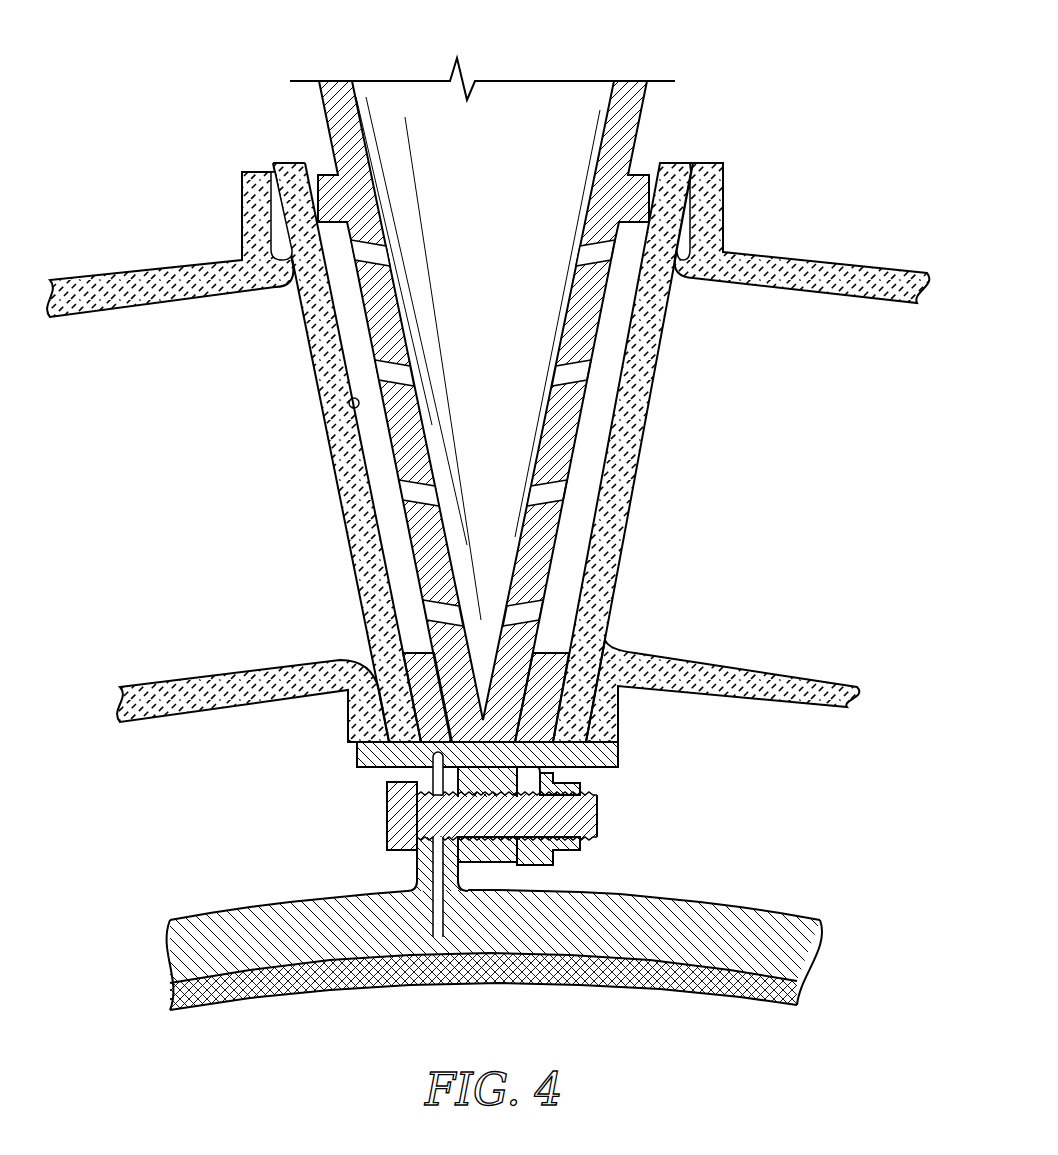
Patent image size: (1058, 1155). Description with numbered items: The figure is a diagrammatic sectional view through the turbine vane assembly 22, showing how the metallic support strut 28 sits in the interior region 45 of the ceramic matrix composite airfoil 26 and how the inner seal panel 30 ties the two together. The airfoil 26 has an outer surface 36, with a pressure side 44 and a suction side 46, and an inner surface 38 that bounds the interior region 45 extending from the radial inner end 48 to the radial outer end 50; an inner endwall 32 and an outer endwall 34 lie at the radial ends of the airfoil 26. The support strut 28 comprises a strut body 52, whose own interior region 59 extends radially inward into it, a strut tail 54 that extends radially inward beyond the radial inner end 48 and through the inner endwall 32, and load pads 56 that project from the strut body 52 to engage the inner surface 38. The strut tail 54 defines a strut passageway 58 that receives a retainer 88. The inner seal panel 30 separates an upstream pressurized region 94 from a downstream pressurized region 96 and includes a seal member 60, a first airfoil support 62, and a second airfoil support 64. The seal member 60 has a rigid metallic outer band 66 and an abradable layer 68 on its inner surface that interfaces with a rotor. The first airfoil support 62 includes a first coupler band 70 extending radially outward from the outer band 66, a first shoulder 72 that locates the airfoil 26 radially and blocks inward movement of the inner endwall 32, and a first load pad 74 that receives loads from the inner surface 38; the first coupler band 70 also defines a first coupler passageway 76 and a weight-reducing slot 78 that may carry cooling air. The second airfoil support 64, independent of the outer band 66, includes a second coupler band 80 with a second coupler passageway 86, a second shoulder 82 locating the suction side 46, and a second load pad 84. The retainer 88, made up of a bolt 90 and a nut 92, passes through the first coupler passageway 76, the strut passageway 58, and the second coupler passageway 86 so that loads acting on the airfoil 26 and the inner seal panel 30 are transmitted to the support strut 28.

The turbine vane assembly 22 is at (183, 130).
The airfoil 26 is at (338, 512).
The support strut 28 is at (584, 463).
The inner seal panel 30 is at (175, 905).
The inner endwall 32 is at (140, 668).
The outer endwall 34 is at (75, 272).
The outer surface 36 is at (303, 324).
The inner surface 38 is at (348, 399).
The pressure side 44 is at (343, 552).
The interior region 45 is at (707, 262).
The suction side 46 is at (656, 421).
The radial inner end 48 is at (362, 715).
The radial outer end 50 is at (309, 162).
The strut body 52 is at (547, 422).
The strut tail 54 is at (485, 878).
The load pads 56 is at (317, 166).
The strut passageway 58 is at (522, 826).
The interior region 59 is at (546, 128).
The seal member 60 is at (782, 898).
The first airfoil support 62 is at (332, 768).
The second airfoil support 64 is at (647, 752).
The outer band 66 is at (735, 897).
The abradable layer 68 is at (716, 1005).
The first coupler band 70 is at (405, 880).
The first shoulder 72 is at (356, 784).
The first load pad 74 is at (414, 638).
The first coupler passageway 76 is at (405, 867).
The slot 78 is at (440, 942).
The second coupler band 80 is at (564, 784).
The second shoulder 82 is at (628, 754).
The second load pad 84 is at (560, 640).
The second coupler passageway 86 is at (537, 817).
The retainer 88 is at (604, 812).
The bolt 90 is at (442, 821).
The nut 92 is at (601, 852).
The pressurized region 94 is at (217, 819).
The pressurized region 96 is at (855, 792).